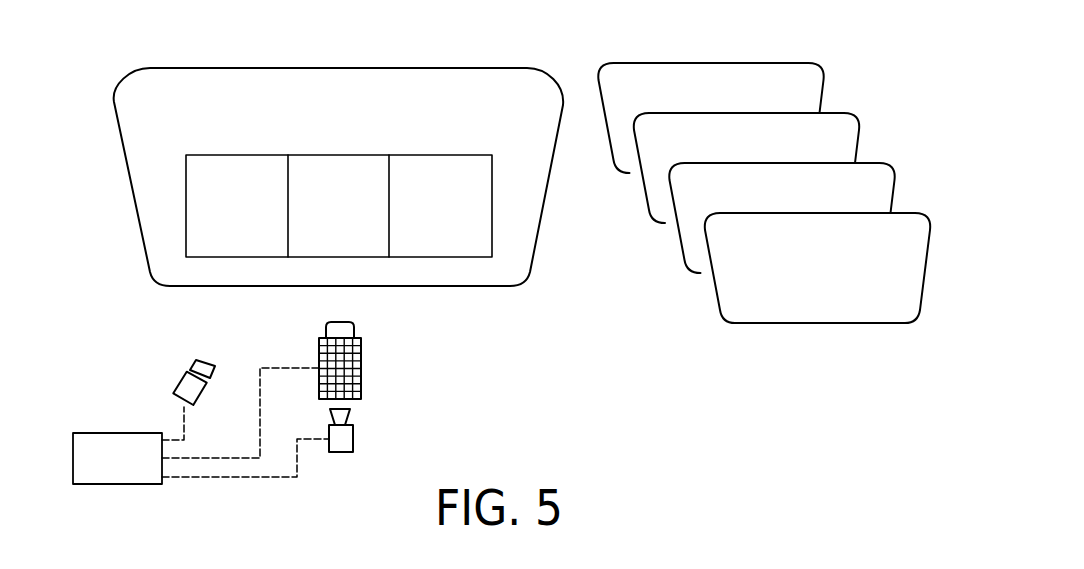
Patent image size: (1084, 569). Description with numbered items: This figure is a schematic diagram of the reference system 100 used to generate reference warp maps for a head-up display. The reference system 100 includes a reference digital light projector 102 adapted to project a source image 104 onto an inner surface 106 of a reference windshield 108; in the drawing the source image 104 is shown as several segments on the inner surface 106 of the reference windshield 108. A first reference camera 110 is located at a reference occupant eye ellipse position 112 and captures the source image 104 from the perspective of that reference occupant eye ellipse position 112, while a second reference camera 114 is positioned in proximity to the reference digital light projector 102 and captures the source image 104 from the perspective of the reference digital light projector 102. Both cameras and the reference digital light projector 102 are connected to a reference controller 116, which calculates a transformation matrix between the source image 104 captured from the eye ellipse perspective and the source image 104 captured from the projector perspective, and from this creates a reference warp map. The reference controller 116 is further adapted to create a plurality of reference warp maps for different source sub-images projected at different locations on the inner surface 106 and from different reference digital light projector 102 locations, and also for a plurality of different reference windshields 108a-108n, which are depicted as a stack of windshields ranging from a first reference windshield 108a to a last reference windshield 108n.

The reference system 100 is at (500, 254).
The reference digital light projector 102 is at (361, 368).
The source image 104 is at (259, 220).
The inner surface 106 is at (318, 83).
The reference windshield 108 is at (307, 171).
The plurality of different reference windshields 108a-108n is at (773, 231).
The reference windshield 108a is at (773, 231).
The reference windshield 108n is at (824, 338).
The first reference camera 110 is at (345, 439).
The reference occupant eye ellipse position 112 is at (143, 379).
The second reference camera 114 is at (185, 384).
The reference controller 116 is at (138, 470).